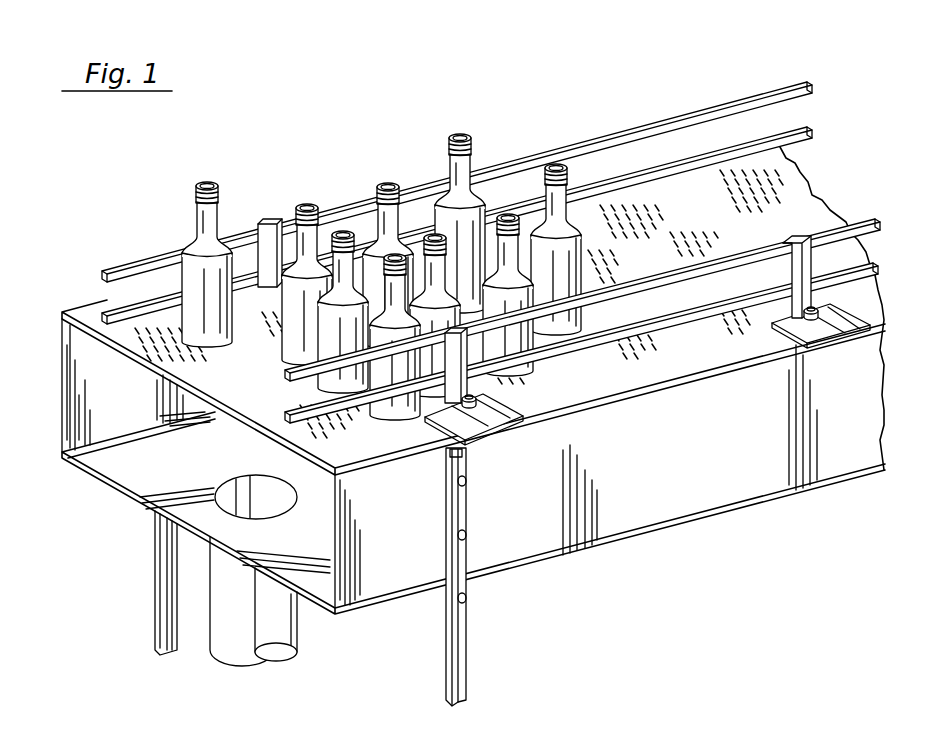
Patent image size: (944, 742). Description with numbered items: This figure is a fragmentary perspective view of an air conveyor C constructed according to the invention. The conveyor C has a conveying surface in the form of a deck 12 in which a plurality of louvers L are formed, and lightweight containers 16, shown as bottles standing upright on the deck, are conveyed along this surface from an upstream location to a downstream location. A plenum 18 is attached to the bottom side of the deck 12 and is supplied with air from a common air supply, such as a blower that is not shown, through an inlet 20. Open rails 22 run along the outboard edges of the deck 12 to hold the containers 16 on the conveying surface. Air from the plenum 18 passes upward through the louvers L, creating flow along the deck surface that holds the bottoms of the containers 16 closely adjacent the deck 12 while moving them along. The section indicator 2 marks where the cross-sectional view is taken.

The deck 12 is at (806, 168).
The containers 16 is at (192, 240).
The plenum 18 is at (147, 470).
The inlet 20 is at (282, 633).
The open rails 22 is at (106, 300).
The section line 2- 2 is at (321, 89).
The conveyor C is at (522, 130).
The louvers L is at (527, 383).